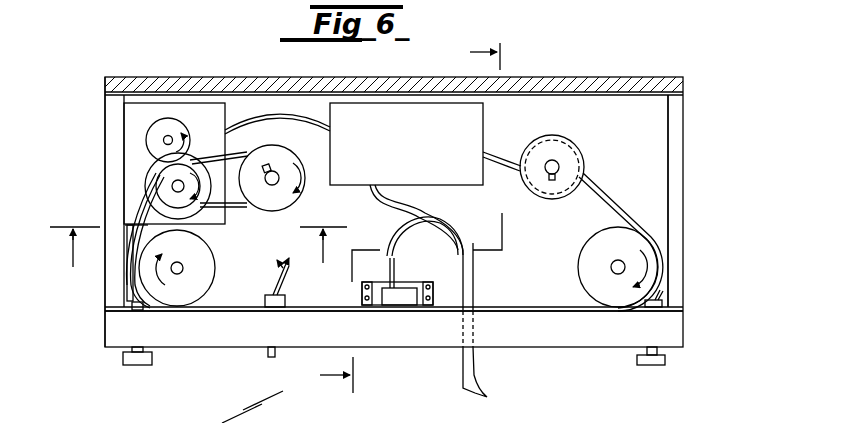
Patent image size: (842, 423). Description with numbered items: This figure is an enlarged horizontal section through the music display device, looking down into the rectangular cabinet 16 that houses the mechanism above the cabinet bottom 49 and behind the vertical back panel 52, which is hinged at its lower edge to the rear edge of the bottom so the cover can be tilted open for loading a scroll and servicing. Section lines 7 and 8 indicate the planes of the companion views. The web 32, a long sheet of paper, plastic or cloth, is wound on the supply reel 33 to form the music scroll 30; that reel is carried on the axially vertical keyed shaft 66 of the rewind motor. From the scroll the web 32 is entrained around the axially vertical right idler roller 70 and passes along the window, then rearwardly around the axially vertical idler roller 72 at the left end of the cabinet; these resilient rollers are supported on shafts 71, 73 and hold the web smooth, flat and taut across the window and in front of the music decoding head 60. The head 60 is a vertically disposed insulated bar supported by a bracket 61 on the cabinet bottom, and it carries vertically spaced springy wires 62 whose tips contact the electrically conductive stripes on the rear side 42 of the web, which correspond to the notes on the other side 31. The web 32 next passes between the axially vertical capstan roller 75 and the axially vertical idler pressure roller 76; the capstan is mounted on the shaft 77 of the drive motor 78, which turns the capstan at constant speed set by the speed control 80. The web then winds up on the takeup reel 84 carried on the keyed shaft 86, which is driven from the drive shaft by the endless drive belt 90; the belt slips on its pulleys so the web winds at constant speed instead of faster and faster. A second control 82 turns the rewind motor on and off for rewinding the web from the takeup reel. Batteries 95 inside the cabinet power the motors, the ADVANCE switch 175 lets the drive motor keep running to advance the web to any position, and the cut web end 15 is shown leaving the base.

The section line 7- 7 is at (401, 218).
The section line 8- 8 is at (198, 258).
The tape strip 15 is at (467, 385).
The rectangular cabinet 16 is at (122, 150).
The music scroll 30 is at (560, 138).
The other side of the web 31 is at (635, 217).
The web 32 is at (513, 313).
The supply reel 33 is at (540, 148).
The rear side of the music web 42 is at (232, 300).
The cabinet bottom 49 is at (655, 158).
The back panel 52 is at (238, 80).
The music decoding head 60 is at (407, 298).
The bracket 61 is at (372, 298).
The springy wires 62 is at (398, 307).
The keyed shaft 66 is at (558, 166).
The right idler roller 70 is at (617, 298).
The shaft 71 is at (612, 272).
The idler roller 72 is at (170, 188).
The shaft 73 is at (183, 268).
The capstan roller 75 is at (168, 198).
The idler pressure roller 76 is at (157, 135).
The shaft 77 is at (153, 182).
The drive motor 78 is at (156, 118).
The speed control 80 is at (141, 367).
The control 82 is at (656, 367).
The takeup reel 84 is at (273, 205).
The keyed shaft 86 is at (277, 200).
The drive belt 90 is at (238, 207).
The batteries 95 is at (482, 108).
The ADVANCE switch 175 is at (271, 360).